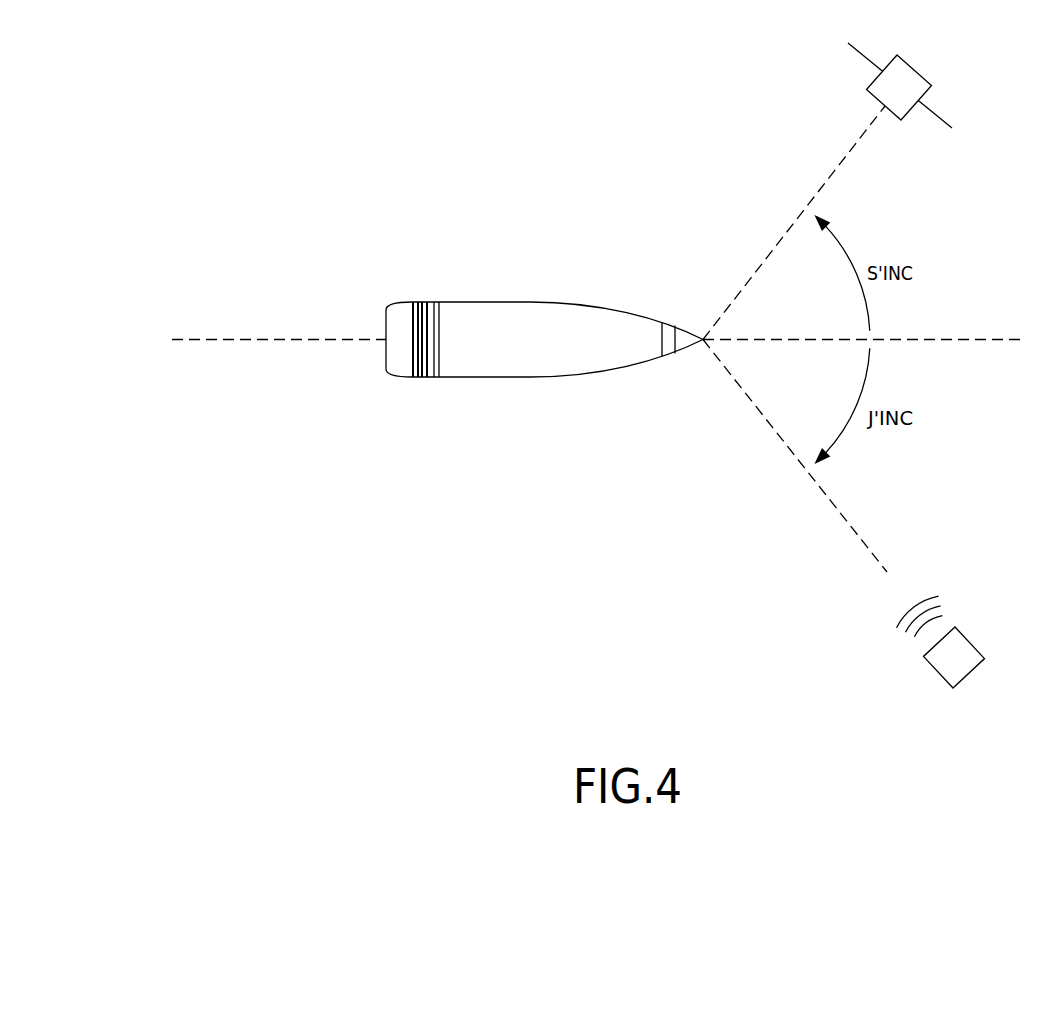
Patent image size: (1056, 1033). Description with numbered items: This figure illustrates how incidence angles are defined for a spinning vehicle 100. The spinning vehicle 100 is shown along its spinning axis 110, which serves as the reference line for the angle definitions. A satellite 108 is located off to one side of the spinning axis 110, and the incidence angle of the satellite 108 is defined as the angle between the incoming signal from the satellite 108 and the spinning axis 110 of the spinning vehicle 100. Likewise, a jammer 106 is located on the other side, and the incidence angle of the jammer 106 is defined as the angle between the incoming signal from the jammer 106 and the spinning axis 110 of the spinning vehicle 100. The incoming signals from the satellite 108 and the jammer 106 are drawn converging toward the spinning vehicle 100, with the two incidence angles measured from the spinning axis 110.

The spinning vehicle 100 is at (500, 378).
The jammer 106 is at (970, 642).
The satellite 108 is at (915, 65).
The spinning axis 110 is at (282, 338).